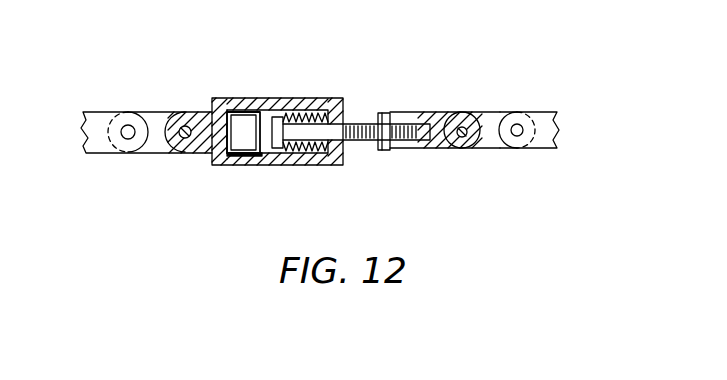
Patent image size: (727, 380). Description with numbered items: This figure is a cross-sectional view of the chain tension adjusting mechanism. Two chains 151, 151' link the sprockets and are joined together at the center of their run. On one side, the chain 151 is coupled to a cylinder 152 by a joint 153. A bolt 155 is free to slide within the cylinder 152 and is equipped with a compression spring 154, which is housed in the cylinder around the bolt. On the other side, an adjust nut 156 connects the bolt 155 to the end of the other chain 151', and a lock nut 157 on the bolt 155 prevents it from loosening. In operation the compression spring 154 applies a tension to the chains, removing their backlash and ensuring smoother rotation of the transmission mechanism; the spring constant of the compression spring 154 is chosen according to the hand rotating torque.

The chain 151 is at (146, 173).
The chain 151' is at (535, 163).
The cylinder 152 is at (282, 99).
The joint 153 is at (205, 123).
The compression spring 154 is at (304, 147).
The bolt 155 is at (343, 123).
The adjust nut 156 is at (450, 150).
The lock nut 157 is at (385, 152).